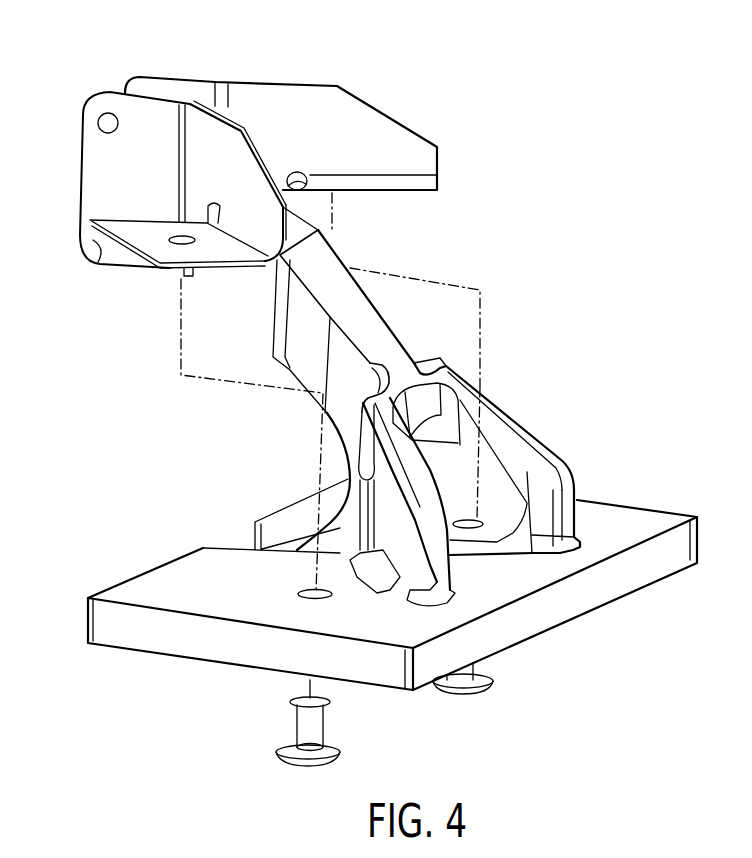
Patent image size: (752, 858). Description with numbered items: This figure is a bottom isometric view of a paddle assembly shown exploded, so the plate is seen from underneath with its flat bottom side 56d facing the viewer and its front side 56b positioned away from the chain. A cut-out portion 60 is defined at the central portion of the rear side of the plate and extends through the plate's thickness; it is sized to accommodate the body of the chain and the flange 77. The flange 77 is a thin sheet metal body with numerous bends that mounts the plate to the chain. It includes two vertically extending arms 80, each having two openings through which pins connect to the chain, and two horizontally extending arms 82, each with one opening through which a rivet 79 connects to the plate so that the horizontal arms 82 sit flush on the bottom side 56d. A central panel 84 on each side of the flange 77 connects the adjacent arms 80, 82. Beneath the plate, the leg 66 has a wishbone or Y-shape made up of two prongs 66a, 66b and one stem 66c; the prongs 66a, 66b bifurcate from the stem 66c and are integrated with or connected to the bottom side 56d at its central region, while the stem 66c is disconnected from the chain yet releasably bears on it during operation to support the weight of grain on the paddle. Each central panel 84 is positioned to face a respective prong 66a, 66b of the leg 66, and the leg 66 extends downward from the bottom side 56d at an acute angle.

The flange 77 is at (152, 77).
The central panel 84 is at (276, 98).
The vertically extending arm 80 is at (100, 177).
The horizontally extending arm 82 is at (138, 242).
The leg 66 is at (450, 377).
The prong 66a is at (543, 448).
The prong 66b is at (430, 481).
The stem 66c is at (330, 265).
The cut-out portion 60 is at (392, 572).
The bottom side 56d is at (632, 521).
The front side 56b is at (577, 602).
The rivet 79 is at (277, 753).